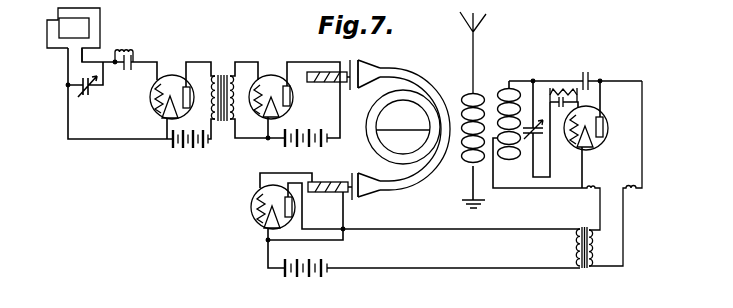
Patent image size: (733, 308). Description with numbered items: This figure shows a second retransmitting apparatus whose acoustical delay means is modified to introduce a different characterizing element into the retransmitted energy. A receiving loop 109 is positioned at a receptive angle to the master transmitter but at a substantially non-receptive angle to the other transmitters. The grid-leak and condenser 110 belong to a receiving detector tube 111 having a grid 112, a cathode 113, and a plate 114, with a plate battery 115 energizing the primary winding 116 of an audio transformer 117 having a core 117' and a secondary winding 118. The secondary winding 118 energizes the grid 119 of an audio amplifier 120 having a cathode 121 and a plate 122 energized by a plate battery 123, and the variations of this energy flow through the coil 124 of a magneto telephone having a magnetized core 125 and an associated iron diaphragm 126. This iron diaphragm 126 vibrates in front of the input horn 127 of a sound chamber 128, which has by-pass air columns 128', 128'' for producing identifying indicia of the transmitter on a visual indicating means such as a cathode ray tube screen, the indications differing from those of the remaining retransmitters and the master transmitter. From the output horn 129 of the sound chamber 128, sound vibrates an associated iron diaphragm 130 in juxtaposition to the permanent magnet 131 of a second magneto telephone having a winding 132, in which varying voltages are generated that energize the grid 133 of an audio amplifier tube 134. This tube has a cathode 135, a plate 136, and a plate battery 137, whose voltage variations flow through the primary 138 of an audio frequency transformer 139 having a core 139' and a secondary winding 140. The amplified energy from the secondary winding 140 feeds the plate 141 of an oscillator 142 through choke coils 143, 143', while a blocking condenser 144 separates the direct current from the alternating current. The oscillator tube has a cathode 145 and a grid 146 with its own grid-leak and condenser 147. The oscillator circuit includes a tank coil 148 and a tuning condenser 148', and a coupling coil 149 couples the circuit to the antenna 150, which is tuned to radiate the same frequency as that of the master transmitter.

The receiving loop 109 is at (54, 17).
The grid-leak and condenser 110 is at (133, 59).
The receiving detector tube 111 is at (166, 75).
The grid 112 is at (152, 97).
The cathode 113 is at (166, 118).
The plate 114 is at (187, 87).
The plate battery 115 is at (178, 150).
The primary winding 116 is at (216, 106).
The audio transformer 117 is at (217, 122).
The core 117' is at (240, 59).
The secondary winding 118 is at (233, 118).
The grid 119 is at (260, 84).
The audio amplifier 120 is at (276, 76).
The cathode 121 is at (279, 117).
The plate 122 is at (290, 100).
The plate battery 123 is at (302, 147).
The coil 124 is at (333, 72).
The magnetized core 125 is at (350, 62).
The iron diaphragm 126 is at (350, 88).
The input horn 127 is at (368, 70).
The sound chamber 128 is at (415, 122).
The by-pass air column 128' is at (444, 75).
The by-pass air column 128'' is at (403, 127).
The output horn 129 is at (370, 192).
The iron diaphragm 130 is at (352, 200).
The permanent magnet 131 is at (345, 182).
The winding 132 is at (310, 192).
The grid 133 is at (251, 210).
The audio amplifier tube 134 is at (253, 196).
The cathode 135 is at (263, 222).
The plate 136 is at (292, 210).
The plate battery 137 is at (307, 278).
The primary 138 is at (572, 247).
The audio frequency transformer 139 is at (582, 240).
The core 139' is at (581, 262).
The secondary winding 140 is at (597, 258).
The plate 141 is at (601, 117).
The oscillator 142 is at (609, 126).
The choke coil 143 is at (572, 208).
The choke coil 143' is at (628, 173).
The blocking condenser 144 is at (590, 75).
The cathode 145 is at (600, 147).
The grid 146 is at (572, 142).
The grid-leak and condenser 147 is at (560, 88).
The tank coil 148 is at (513, 110).
The tuning condenser 148' is at (521, 166).
The coupling coil 149 is at (465, 153).
The antenna 150 is at (482, 22).